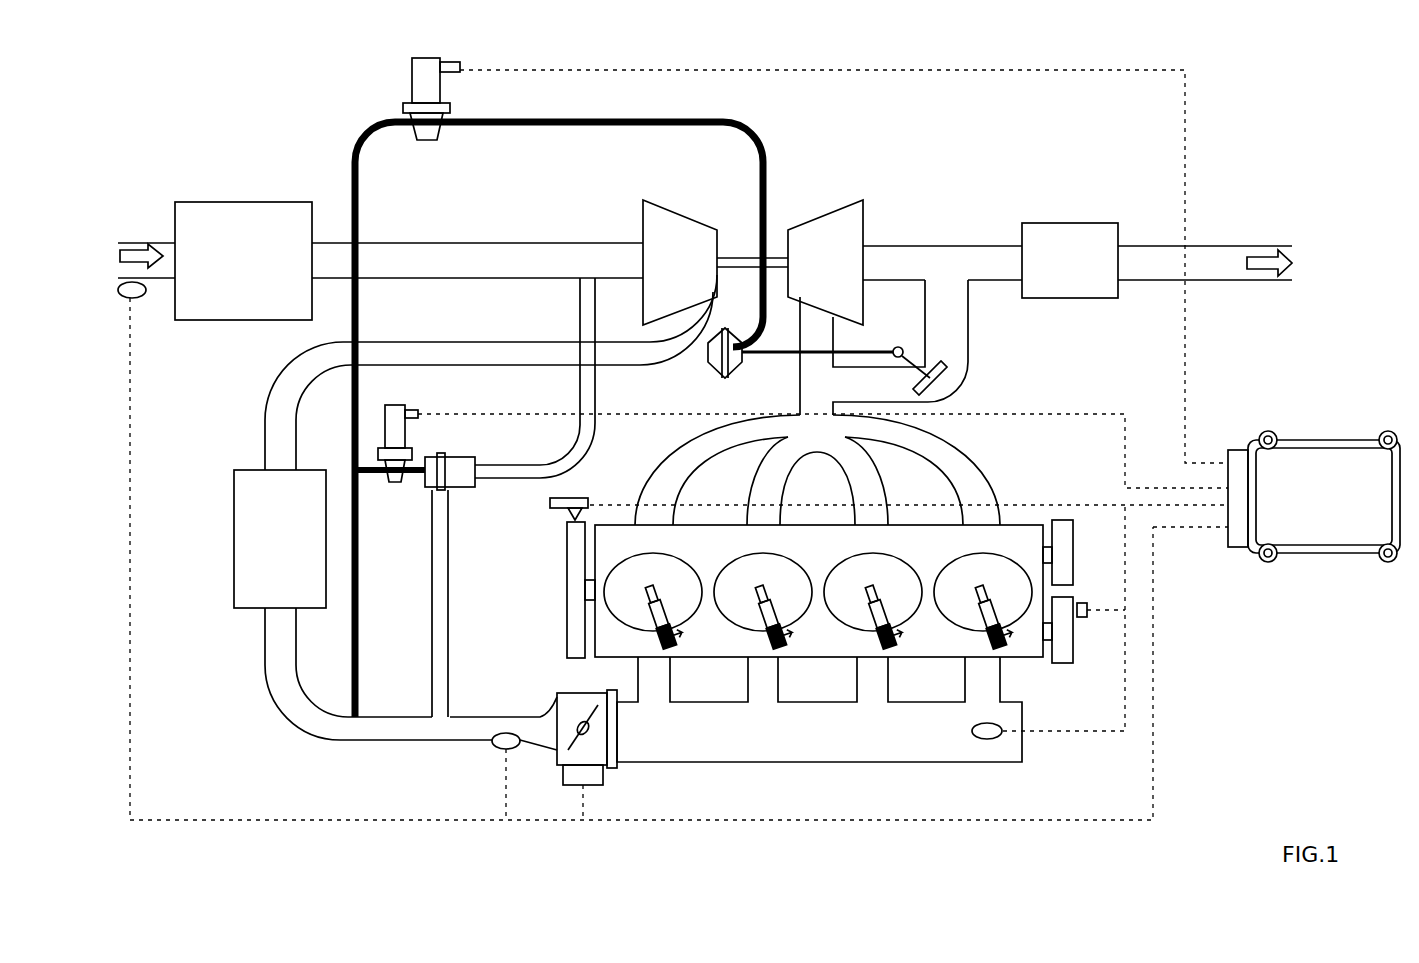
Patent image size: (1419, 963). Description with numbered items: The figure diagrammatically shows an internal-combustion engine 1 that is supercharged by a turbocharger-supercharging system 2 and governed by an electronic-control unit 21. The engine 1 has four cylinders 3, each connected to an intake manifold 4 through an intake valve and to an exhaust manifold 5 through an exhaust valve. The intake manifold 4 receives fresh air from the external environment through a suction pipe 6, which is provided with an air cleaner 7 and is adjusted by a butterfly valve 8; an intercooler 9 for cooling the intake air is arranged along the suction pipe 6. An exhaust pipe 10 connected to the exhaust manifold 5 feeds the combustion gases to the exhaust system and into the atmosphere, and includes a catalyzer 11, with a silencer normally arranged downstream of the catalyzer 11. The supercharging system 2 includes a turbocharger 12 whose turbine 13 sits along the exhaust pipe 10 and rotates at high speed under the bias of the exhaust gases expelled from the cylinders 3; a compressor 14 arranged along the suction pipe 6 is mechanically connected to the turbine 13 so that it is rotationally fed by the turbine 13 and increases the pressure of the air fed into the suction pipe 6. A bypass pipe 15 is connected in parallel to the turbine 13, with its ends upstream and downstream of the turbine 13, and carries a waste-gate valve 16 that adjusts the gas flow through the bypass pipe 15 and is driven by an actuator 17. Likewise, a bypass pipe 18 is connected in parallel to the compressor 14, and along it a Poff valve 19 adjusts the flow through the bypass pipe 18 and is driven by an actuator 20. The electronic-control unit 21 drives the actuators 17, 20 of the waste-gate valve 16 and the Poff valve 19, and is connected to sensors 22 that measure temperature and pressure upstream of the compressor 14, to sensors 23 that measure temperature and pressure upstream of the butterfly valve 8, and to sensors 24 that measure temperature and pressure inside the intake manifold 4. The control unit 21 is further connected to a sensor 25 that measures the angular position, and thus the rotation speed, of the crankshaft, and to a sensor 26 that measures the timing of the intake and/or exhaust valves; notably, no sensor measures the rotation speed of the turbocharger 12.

The internal-combustion engine 1 is at (196, 71).
The turbocharger-supercharging system 2 is at (557, 207).
The cylinders 3 is at (818, 601).
The intake manifold 4 is at (819, 709).
The exhaust manifold 5 is at (817, 470).
The suction pipe 6 is at (275, 430).
The air cleaner 7 is at (215, 261).
The butterfly valve 8 is at (581, 754).
The intercooler 9 is at (280, 539).
The exhaust pipe 10 is at (993, 240).
The catalyzer 11 is at (1070, 260).
The turbocharger 12 is at (753, 210).
The turbine 13 is at (798, 247).
The compressor 14 is at (660, 227).
The bypass pipe 15 is at (968, 337).
The waste-gate valve 16 is at (950, 380).
The actuator 17 is at (436, 88).
The bypass pipe 18 is at (450, 585).
The Poff valve 19 is at (450, 487).
The actuator 20 is at (403, 432).
The electronic-control unit 21 is at (1314, 496).
The sensors 22 is at (135, 300).
The sensors 23 is at (502, 752).
The sensors 24 is at (990, 740).
The sensor 25 is at (590, 497).
The sensor 26 is at (1083, 620).